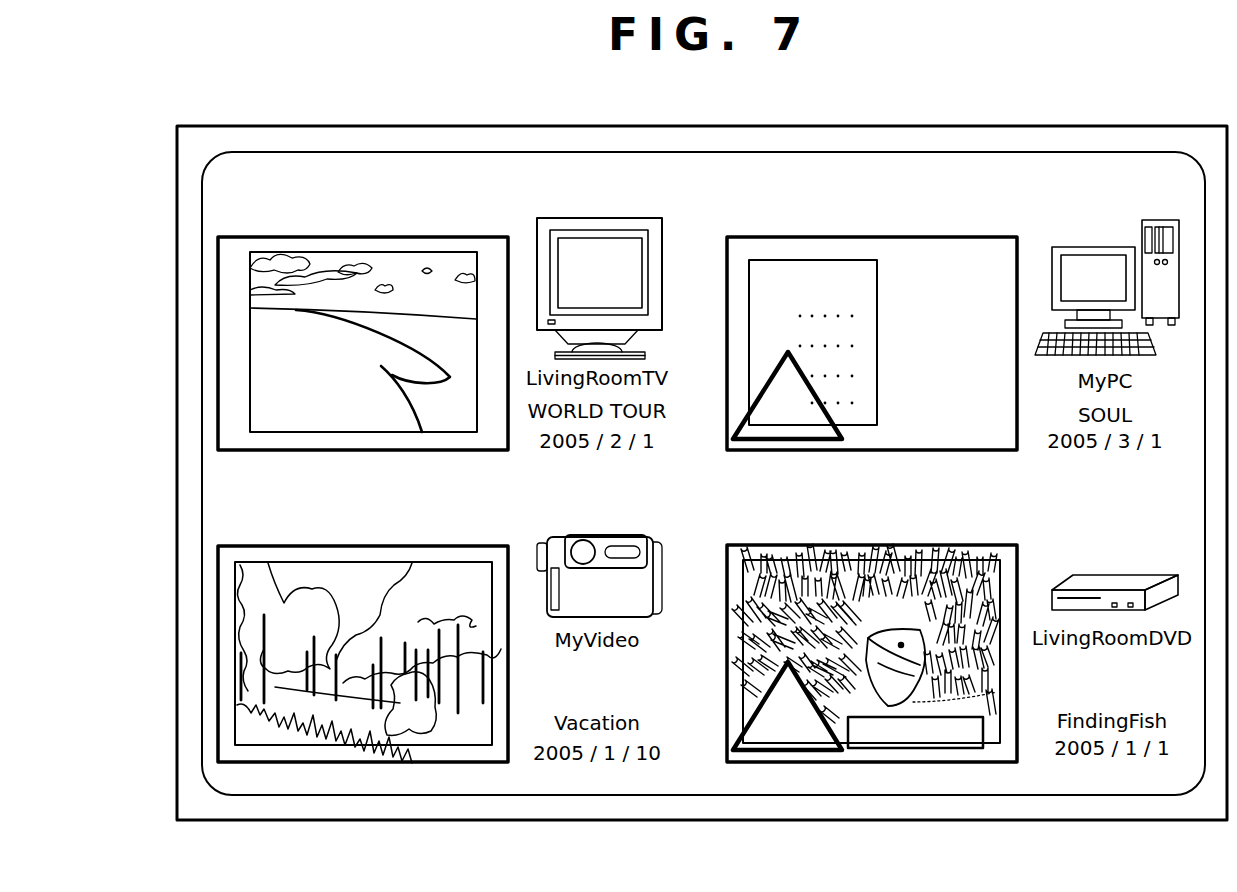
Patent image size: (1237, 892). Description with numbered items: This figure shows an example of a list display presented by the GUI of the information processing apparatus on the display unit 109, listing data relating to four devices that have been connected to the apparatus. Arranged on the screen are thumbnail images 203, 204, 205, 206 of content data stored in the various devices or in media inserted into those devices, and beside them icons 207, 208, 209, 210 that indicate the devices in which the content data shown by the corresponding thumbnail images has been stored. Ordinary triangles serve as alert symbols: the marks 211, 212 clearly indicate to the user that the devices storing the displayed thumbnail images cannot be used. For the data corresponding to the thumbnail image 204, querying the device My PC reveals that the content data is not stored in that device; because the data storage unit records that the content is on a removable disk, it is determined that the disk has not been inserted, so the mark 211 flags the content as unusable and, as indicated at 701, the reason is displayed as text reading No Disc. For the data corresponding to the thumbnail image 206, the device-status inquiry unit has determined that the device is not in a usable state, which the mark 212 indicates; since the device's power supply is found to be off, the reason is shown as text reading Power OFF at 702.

The display unit 109 is at (1151, 126).
The thumbnail image 203 is at (472, 237).
The thumbnail image 204 is at (975, 237).
The thumbnail image 205 is at (461, 546).
The thumbnail image 206 is at (966, 545).
The device icon 207 is at (632, 218).
The device icon 208 is at (1079, 247).
The device icon 209 is at (626, 536).
The device icon 210 is at (1134, 575).
The mark 211 is at (782, 428).
The mark 212 is at (760, 738).
The No Disc text display 701 is at (915, 388).
The Power OFF text display 702 is at (900, 750).